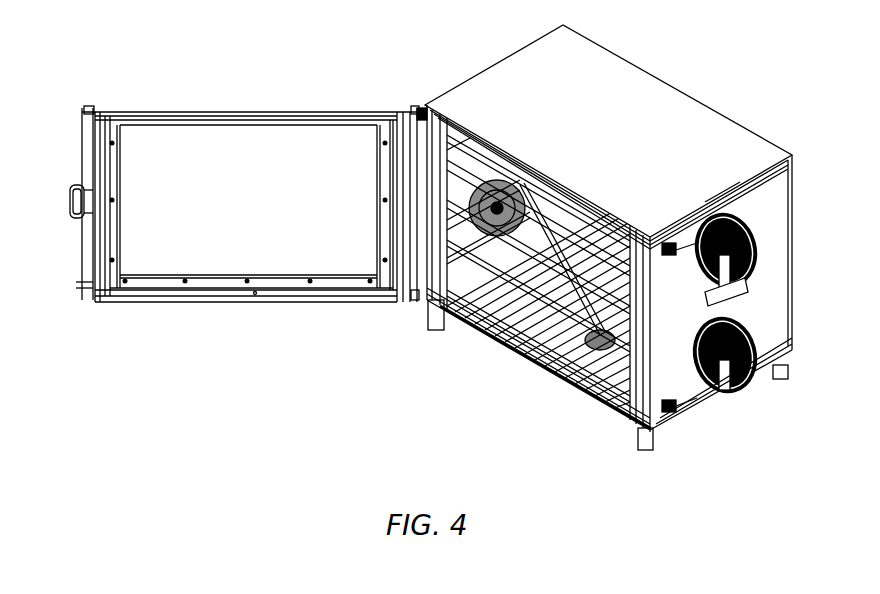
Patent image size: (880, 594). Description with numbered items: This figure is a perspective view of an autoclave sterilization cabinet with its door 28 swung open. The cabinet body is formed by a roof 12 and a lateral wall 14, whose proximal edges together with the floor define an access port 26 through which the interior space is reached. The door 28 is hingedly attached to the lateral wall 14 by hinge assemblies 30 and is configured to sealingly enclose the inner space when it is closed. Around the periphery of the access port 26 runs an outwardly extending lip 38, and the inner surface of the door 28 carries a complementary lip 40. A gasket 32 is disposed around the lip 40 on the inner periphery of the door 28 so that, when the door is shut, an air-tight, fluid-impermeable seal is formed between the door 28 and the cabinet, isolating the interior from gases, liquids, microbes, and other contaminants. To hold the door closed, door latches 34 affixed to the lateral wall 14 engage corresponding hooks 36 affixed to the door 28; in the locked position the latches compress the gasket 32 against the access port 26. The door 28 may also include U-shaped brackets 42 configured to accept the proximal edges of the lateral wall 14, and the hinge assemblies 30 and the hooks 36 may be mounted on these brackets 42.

The roof 12 is at (714, 110).
The lateral wall 14 is at (793, 243).
The access port 26 is at (524, 342).
The door 28 is at (205, 108).
The hinge assemblies 30 is at (421, 108).
The gasket 32 is at (210, 293).
The door latches 34 is at (694, 408).
The hooks 36 is at (80, 283).
The lip 38 is at (647, 393).
The lip 40 is at (260, 295).
The U-shaped brackets 42 is at (92, 106).